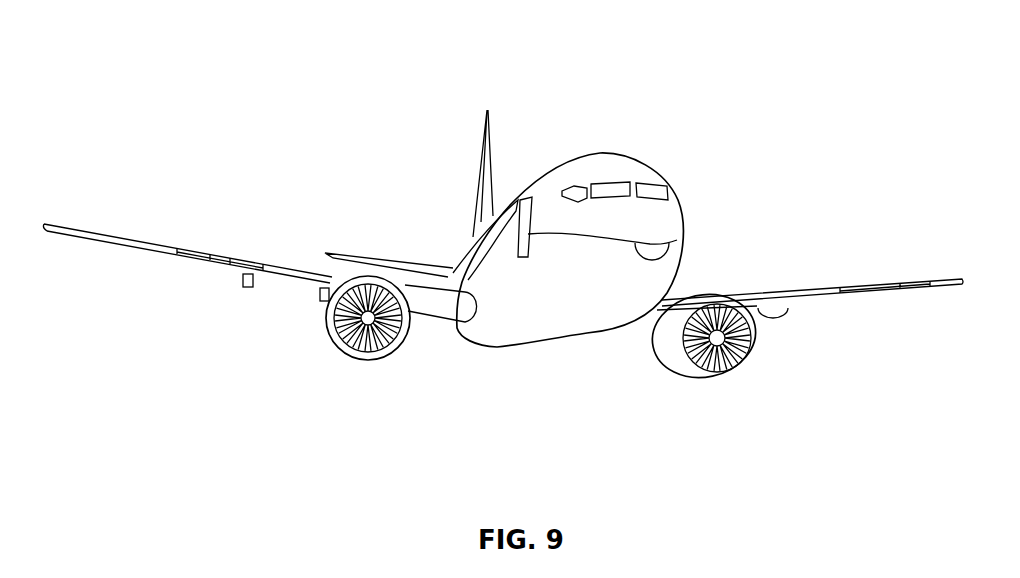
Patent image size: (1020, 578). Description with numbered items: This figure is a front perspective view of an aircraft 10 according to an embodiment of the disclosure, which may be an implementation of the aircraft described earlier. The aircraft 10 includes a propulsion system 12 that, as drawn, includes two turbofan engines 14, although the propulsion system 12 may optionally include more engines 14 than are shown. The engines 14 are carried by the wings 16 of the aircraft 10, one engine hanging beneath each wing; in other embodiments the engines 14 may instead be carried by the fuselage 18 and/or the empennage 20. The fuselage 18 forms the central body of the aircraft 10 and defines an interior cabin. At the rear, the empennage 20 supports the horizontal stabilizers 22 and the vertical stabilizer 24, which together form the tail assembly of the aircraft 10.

The aircraft 10 is at (276, 61).
The propulsion system 12 is at (796, 371).
The turbofan engines 14 is at (363, 357).
The wings 16 is at (167, 246).
The fuselage 18 is at (681, 211).
The empennage 20 is at (473, 236).
The horizontal stabilizers 22 is at (360, 257).
The vertical stabilizer 24 is at (482, 143).